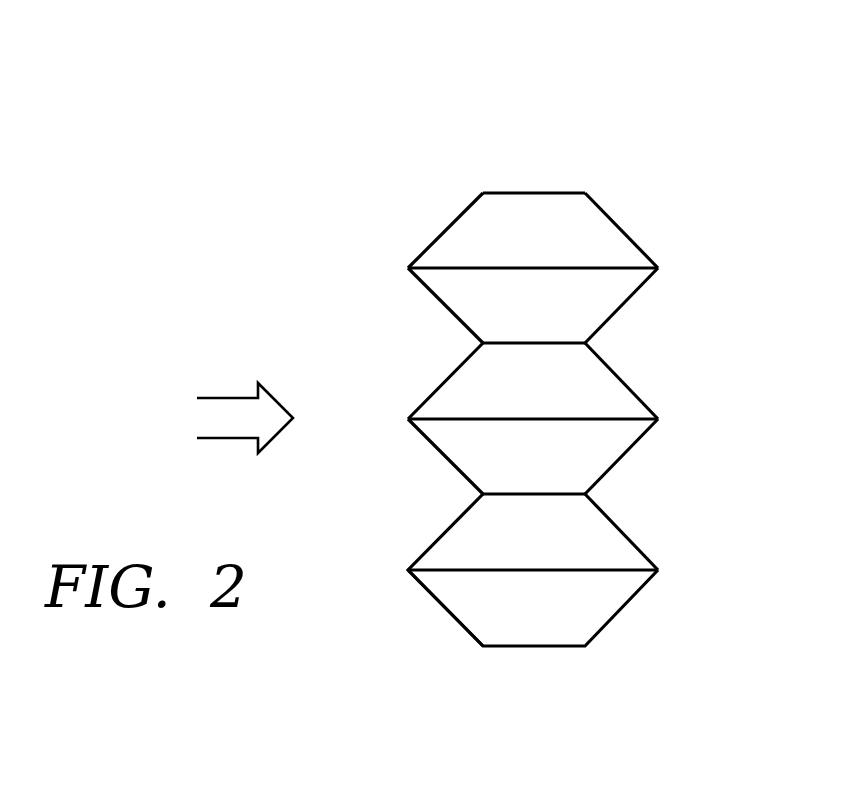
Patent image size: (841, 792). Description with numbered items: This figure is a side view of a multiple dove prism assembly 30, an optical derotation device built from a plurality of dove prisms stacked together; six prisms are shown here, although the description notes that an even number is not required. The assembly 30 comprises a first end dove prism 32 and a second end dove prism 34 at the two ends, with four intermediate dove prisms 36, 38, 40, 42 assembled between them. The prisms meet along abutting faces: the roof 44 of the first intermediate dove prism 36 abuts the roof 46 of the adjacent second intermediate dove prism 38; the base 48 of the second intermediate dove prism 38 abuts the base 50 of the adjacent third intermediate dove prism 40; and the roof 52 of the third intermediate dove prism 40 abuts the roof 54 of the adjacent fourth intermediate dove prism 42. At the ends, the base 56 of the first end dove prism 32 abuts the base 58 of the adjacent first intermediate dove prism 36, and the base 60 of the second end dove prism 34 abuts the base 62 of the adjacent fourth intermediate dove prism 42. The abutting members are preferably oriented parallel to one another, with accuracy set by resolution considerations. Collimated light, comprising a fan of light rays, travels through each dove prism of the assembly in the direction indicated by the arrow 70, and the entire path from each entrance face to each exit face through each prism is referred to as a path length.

The multiple dove prism assembly 30 is at (598, 167).
The first end dove prism 32 is at (594, 219).
The second end dove prism 34 is at (467, 612).
The first intermediate dove prism 36 is at (466, 312).
The second intermediate dove prism 38 is at (594, 366).
The third intermediate dove prism 40 is at (470, 465).
The fourth intermediate dove prism 42 is at (597, 520).
The roof of first intermediate dove prism 44 is at (547, 340).
The roof of second intermediate dove prism 46 is at (525, 349).
The base of second intermediate dove prism 48 is at (448, 416).
The base of third intermediate dove prism 50 is at (611, 428).
The roof of third intermediate dove prism 52 is at (547, 491).
The roof of fourth intermediate dove prism 54 is at (522, 498).
The base of first end dove prism 56 is at (466, 265).
The base of first intermediate dove prism 58 is at (613, 273).
The base of second end dove prism 60 is at (601, 576).
The base of fourth intermediate dove prism 62 is at (477, 567).
The arrow 70 is at (219, 404).